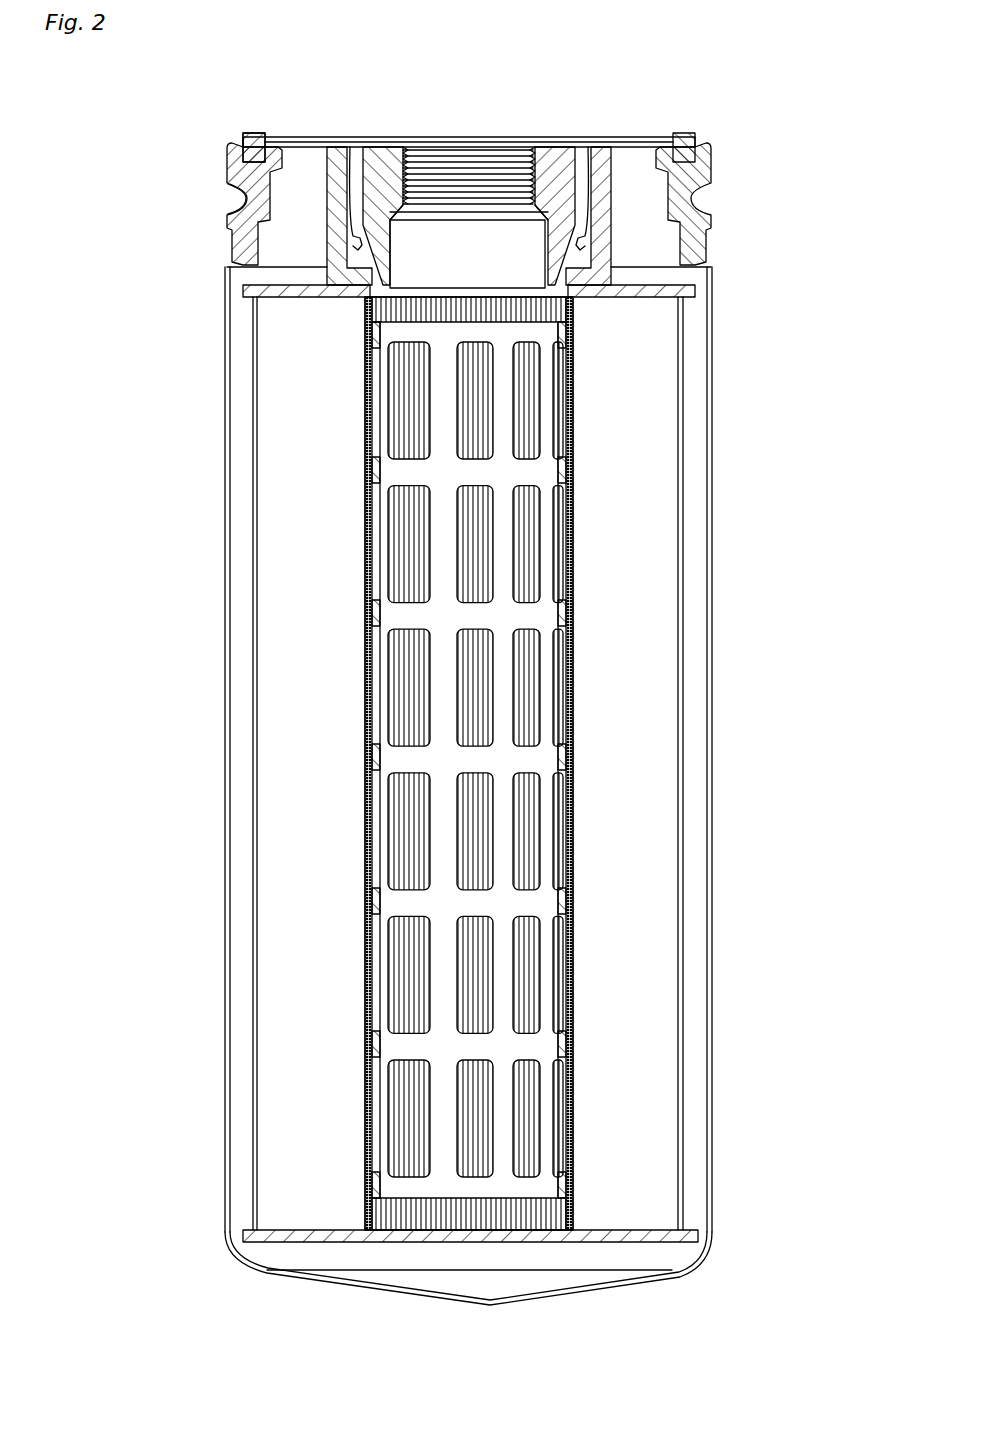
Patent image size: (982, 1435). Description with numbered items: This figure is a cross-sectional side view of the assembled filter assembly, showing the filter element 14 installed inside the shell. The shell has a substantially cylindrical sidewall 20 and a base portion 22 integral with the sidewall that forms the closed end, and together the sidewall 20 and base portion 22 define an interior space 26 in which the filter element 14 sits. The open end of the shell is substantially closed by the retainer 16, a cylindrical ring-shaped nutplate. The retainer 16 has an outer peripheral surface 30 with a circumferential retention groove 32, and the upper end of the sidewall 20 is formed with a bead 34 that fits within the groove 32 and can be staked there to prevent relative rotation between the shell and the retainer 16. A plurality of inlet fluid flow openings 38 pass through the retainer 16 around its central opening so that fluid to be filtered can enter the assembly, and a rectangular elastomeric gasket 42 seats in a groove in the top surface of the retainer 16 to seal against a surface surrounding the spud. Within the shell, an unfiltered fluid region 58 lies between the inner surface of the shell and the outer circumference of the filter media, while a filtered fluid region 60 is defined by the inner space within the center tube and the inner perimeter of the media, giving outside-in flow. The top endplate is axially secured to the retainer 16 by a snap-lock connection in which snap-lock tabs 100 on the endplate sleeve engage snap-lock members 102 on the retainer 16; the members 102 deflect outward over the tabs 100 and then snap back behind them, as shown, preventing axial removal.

The filter element 14 is at (662, 449).
The retainer 16 is at (714, 136).
The sidewall 20 is at (712, 617).
The base portion 22 is at (648, 1283).
The interior space 26 is at (247, 585).
The outer peripheral surface 30 is at (227, 185).
The retention groove 32 is at (713, 205).
The bead 34 is at (243, 193).
The inlet fluid flow openings 38 is at (307, 165).
The gasket 42 is at (253, 138).
The unfiltered fluid region 58 is at (695, 765).
The filtered fluid region 60 is at (413, 1160).
The snap-lock tabs 100 is at (358, 240).
The snap-lock members 102 is at (325, 273).